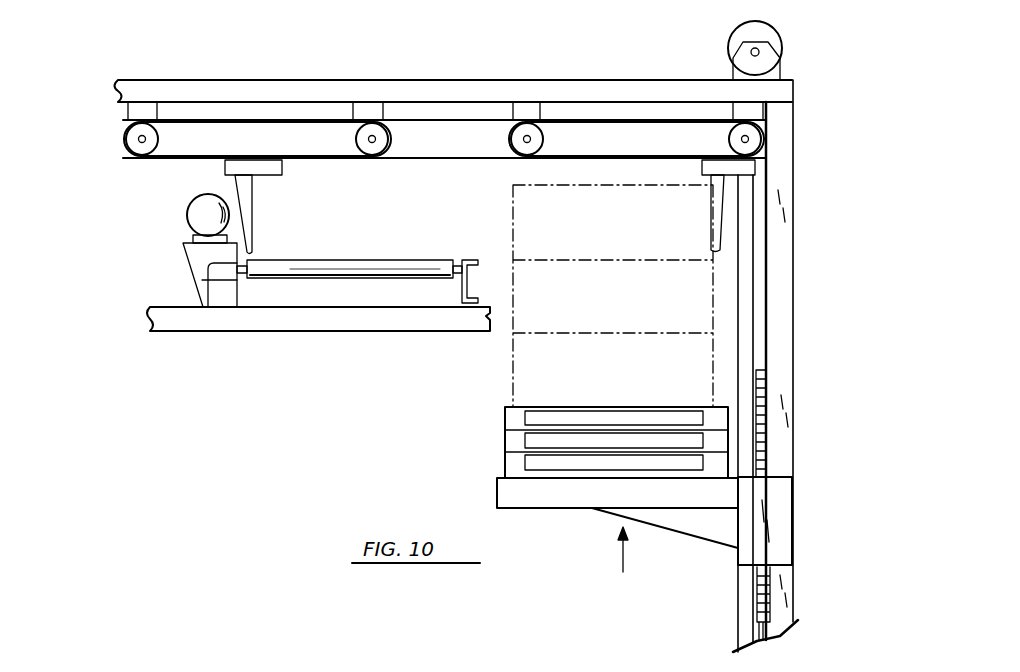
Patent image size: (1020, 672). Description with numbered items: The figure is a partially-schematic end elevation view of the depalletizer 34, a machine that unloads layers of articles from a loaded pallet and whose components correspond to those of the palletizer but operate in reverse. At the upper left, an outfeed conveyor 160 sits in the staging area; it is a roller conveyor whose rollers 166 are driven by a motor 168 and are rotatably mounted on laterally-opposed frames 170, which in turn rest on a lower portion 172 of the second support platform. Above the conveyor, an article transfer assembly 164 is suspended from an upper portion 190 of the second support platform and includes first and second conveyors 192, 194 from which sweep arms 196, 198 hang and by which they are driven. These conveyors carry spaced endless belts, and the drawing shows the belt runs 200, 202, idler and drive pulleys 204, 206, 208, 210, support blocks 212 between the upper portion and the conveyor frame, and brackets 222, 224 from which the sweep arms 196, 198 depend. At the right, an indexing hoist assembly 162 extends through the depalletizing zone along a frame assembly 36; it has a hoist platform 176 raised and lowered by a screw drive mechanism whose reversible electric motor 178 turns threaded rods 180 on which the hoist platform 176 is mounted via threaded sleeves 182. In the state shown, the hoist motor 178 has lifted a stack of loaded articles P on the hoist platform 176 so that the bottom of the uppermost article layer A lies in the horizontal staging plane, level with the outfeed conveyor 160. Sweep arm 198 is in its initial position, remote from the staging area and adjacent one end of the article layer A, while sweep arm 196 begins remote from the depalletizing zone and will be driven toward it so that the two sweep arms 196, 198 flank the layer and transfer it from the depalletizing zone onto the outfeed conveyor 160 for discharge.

The depalletizer 34 is at (148, 250).
The frame assembly 36 is at (805, 275).
The outfeed conveyor 160 is at (362, 298).
The indexing hoist assembly 162 is at (708, 548).
The article transfer assembly 164 is at (622, 114).
The rollers 166 is at (362, 265).
The motor 168 is at (186, 215).
The frames 170 is at (242, 303).
The lower portion 172 is at (170, 327).
The hoist platform 176 is at (503, 490).
The reversible electric motor 178 is at (780, 42).
The threaded rods 180 is at (768, 383).
The threaded sleeves 182 is at (772, 528).
The upper portion 190 is at (198, 90).
The first conveyor 192 is at (392, 124).
The second conveyor 194 is at (775, 127).
The sweep arm 196 is at (233, 183).
The sweep arm 198 is at (722, 215).
The belt run 200 is at (205, 128).
The belt run 202 is at (656, 125).
The pulley 204 is at (543, 138).
The pulley 206 is at (762, 140).
The pulley 208 is at (128, 140).
The pulley 210 is at (388, 138).
The support block 212 is at (143, 110).
The left bracket 222 is at (223, 170).
The right bracket 224 is at (757, 168).
The article A is at (513, 200).
The stack of articles P is at (507, 442).